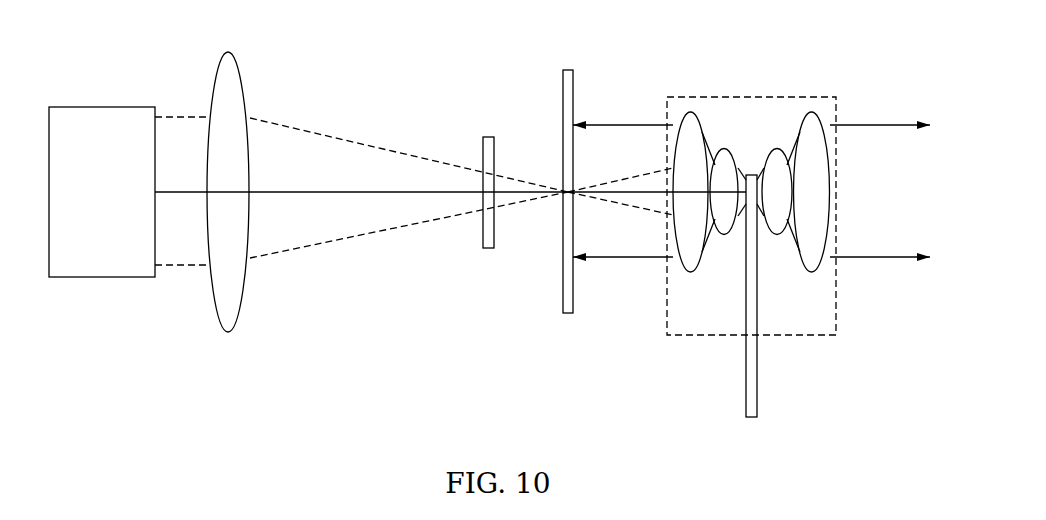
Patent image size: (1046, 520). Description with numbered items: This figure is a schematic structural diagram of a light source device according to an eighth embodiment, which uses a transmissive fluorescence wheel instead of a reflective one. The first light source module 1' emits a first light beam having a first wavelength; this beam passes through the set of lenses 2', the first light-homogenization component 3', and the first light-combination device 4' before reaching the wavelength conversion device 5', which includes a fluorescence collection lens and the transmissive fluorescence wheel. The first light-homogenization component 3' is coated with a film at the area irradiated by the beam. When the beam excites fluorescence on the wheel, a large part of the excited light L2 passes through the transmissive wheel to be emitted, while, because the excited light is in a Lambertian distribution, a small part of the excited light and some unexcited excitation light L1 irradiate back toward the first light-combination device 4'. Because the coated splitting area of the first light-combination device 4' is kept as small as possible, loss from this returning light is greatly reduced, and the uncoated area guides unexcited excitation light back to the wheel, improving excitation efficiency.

The first light source module 1' is at (102, 149).
The set of lenses 2' is at (221, 177).
The first light-homogenization component 3' is at (463, 157).
The first light-combination device 4' is at (547, 172).
The wavelength conversion device 5' is at (735, 231).
The small part of excited light and unexcited excitation light L1 is at (604, 260).
The large part of excited light L2 is at (870, 258).